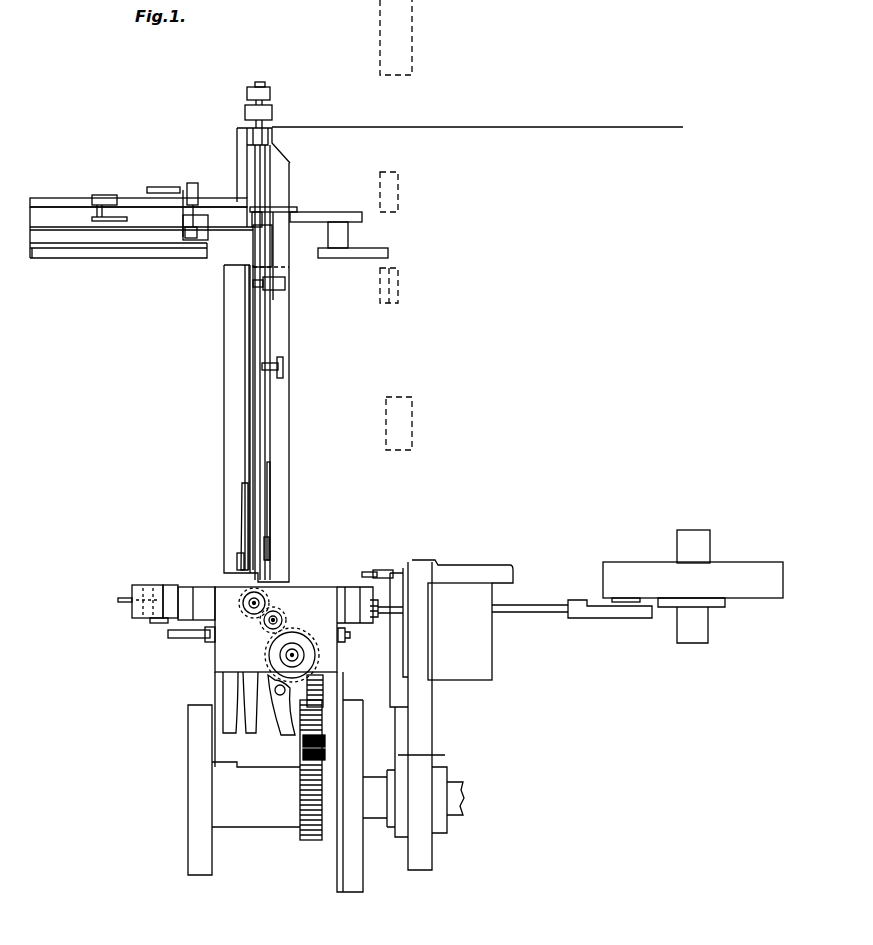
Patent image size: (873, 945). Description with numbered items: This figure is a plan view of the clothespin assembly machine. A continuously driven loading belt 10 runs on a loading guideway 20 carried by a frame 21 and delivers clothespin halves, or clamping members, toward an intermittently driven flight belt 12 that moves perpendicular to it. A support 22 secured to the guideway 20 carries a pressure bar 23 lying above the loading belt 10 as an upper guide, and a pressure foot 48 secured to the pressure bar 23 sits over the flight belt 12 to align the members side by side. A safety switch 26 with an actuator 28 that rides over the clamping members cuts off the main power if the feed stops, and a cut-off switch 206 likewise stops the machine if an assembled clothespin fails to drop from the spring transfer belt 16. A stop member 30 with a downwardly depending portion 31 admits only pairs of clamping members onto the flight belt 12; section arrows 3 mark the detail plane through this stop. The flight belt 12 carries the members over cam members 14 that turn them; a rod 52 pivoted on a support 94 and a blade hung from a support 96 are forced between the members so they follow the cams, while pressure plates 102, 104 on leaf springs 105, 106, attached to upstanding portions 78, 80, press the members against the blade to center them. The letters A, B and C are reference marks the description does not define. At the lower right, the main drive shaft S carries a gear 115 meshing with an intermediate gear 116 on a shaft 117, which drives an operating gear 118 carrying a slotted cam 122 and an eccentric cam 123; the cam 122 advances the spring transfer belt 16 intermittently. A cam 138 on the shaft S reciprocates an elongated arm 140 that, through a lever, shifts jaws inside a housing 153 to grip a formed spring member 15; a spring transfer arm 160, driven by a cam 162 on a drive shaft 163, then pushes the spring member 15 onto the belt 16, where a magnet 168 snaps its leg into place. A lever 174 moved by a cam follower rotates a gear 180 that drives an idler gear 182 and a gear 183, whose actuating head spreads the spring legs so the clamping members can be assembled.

The flight belt 12 is at (246, 93).
The frame 21 is at (237, 160).
The cam members 14 is at (245, 415).
The upstanding portion 78 is at (245, 441).
The rod 52 is at (262, 328).
The upstanding portion 80 is at (270, 441).
The leaf spring 105 is at (242, 513).
The pressure plate 102 is at (242, 562).
The leaf spring 106 is at (270, 498).
The pressure plate 104 is at (269, 546).
The top plate A is at (224, 198).
The loading guideway 20 is at (60, 198).
The loading belt 10 is at (72, 238).
The pressure bar 23 is at (163, 233).
The safety switch 26 is at (106, 195).
The actuator 28 is at (112, 223).
The support 22 is at (176, 190).
The point B is at (250, 232).
The point C is at (252, 278).
The section line 3 is at (348, 270).
The stop member 30 is at (285, 208).
The downwardly depending portion 31 is at (252, 215).
The pressure foot 48 is at (265, 250).
The support 94 is at (285, 286).
The support 96 is at (283, 371).
The spring transfer belt 16 is at (161, 585).
The cut-off switch 206 is at (142, 622).
The eccentric cam 123 is at (276, 661).
The gear 180 is at (268, 652).
The gear 183 is at (246, 612).
The idler gear 182 is at (286, 613).
The operating gear 118 is at (323, 690).
The slotted cam 122 is at (225, 690).
The lever 174 is at (262, 736).
The gear 115 is at (303, 826).
The intermediate gear 116 is at (328, 737).
The shaft 117 is at (328, 745).
The magnet 168 is at (368, 570).
The housing 153 is at (406, 633).
The cam 138 is at (415, 741).
The elongated arm 140 is at (438, 791).
The main drive shaft S is at (462, 798).
The spring transfer arm 160 is at (513, 612).
The cam 162 is at (622, 568).
The drive shaft 163 is at (697, 548).
The spring member 15 is at (418, 890).